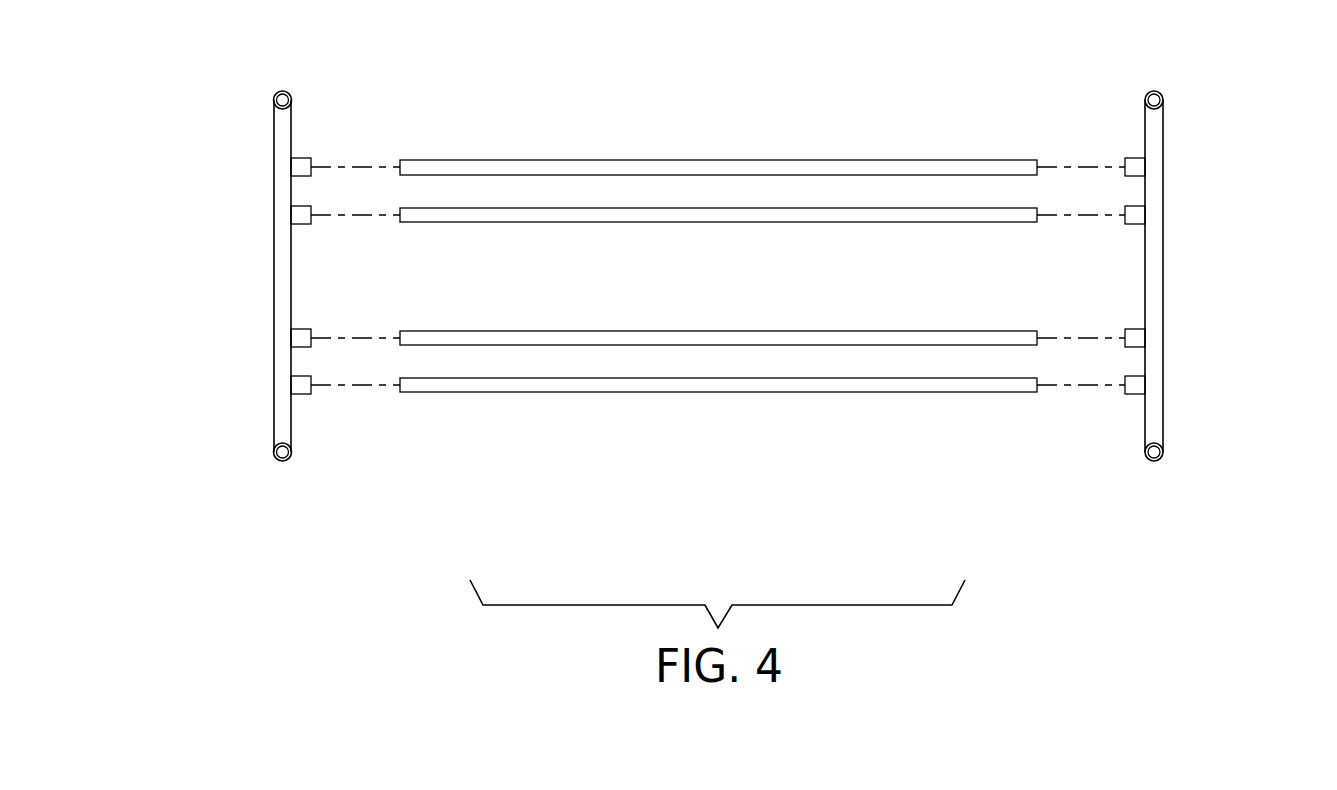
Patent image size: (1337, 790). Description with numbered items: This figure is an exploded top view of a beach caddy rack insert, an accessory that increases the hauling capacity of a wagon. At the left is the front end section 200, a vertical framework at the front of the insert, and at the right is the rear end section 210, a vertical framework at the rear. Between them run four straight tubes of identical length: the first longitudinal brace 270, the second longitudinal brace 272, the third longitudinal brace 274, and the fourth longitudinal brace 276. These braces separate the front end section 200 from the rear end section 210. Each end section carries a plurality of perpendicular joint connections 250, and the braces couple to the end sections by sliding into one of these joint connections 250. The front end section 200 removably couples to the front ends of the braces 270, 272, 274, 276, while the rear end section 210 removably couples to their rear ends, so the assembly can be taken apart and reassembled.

The front end section 200 is at (274, 273).
The rear end section 210 is at (1158, 278).
The perpendicular joint connections 250 is at (305, 170).
The first longitudinal brace 270 is at (566, 335).
The second longitudinal brace 272 is at (725, 216).
The third longitudinal brace 274 is at (802, 385).
The fourth longitudinal brace 276 is at (540, 170).